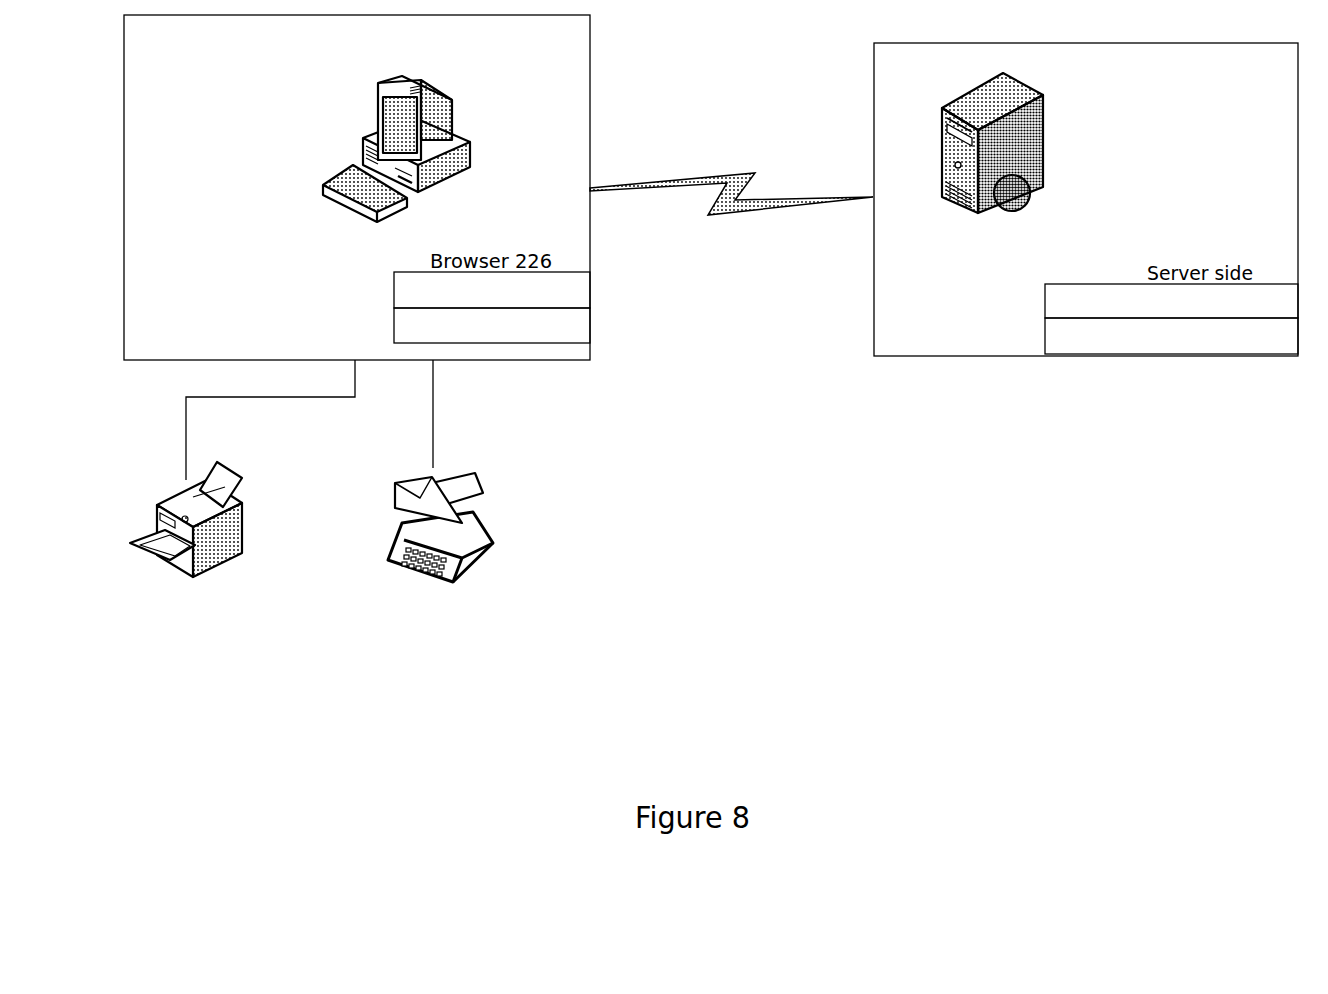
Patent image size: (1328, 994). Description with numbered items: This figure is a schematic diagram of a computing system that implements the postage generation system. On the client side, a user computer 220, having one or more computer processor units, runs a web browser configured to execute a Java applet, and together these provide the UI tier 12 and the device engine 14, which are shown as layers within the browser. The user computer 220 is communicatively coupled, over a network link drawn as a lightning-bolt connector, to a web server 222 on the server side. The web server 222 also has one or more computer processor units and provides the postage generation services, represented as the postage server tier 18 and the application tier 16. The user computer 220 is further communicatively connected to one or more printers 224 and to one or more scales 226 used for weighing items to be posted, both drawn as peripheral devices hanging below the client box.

The user computer 220 is at (370, 149).
The web server 222 is at (992, 160).
The printer 224 is at (186, 538).
The scale 226 is at (440, 560).
The UI tier 12 is at (492, 290).
The device engine 14 is at (492, 325).
The postage server tier 18 is at (1171, 301).
The application tier 16 is at (1171, 336).